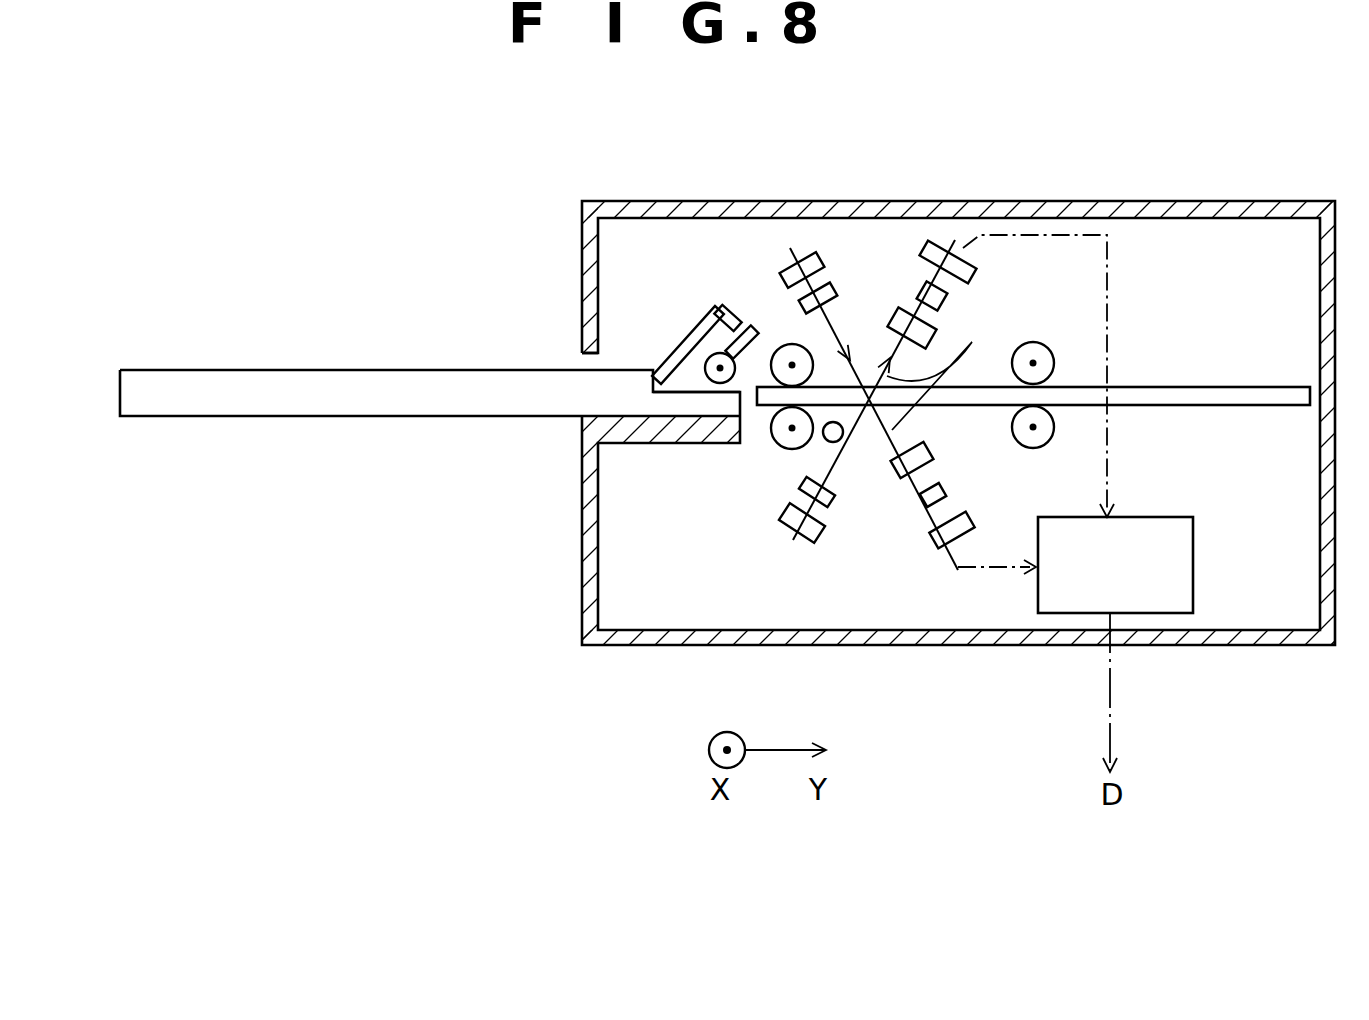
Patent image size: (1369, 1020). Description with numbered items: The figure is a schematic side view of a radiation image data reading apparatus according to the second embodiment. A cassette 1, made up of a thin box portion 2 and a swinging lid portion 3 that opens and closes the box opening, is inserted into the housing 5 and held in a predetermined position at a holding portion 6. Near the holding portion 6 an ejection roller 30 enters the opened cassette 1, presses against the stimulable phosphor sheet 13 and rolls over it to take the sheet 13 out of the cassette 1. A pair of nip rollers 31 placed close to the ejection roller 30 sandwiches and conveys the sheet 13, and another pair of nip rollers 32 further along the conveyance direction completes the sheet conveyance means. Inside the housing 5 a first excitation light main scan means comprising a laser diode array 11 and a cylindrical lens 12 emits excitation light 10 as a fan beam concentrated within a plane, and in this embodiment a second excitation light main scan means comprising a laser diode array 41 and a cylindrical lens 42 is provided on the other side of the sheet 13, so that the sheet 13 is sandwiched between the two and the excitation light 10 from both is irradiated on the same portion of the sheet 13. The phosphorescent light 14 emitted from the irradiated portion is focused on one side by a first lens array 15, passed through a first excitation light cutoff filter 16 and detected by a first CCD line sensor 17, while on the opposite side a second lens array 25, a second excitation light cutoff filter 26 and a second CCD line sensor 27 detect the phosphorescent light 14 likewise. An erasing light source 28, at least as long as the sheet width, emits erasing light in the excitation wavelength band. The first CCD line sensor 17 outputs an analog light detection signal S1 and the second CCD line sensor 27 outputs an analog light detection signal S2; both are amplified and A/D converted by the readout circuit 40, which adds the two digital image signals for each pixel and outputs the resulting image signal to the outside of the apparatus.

The cassette 1 is at (430, 387).
The box portion 2 is at (366, 418).
The lid portion 3 is at (678, 347).
The housing 5 is at (583, 222).
The holding portion 6 is at (548, 438).
The excitation light 10 is at (850, 342).
The laser diode array 11 is at (797, 252).
The cylindrical lens 12 is at (834, 296).
The stimulable phosphor sheet 13 is at (1252, 387).
The phosphorescent light 14 is at (945, 368).
The first lens array 15 is at (898, 332).
The first excitation light cutoff filter 16 is at (921, 296).
The first CCD line sensor 17 is at (948, 250).
The second lens array 25 is at (930, 452).
The second excitation light cutoff filter 26 is at (946, 495).
The second CCD line sensor 27 is at (935, 538).
The erasing light source 28 is at (825, 440).
The ejection roller 30 is at (718, 355).
The pair of nip rollers 31 is at (775, 357).
The pair of nip rollers 32 is at (1046, 363).
The readout circuit 40 is at (1092, 580).
The laser diode array 41 is at (786, 532).
The cylindrical lens 42 is at (800, 488).
The analog light detection signal S1 is at (1108, 335).
The analog light detection signal S2 is at (963, 568).